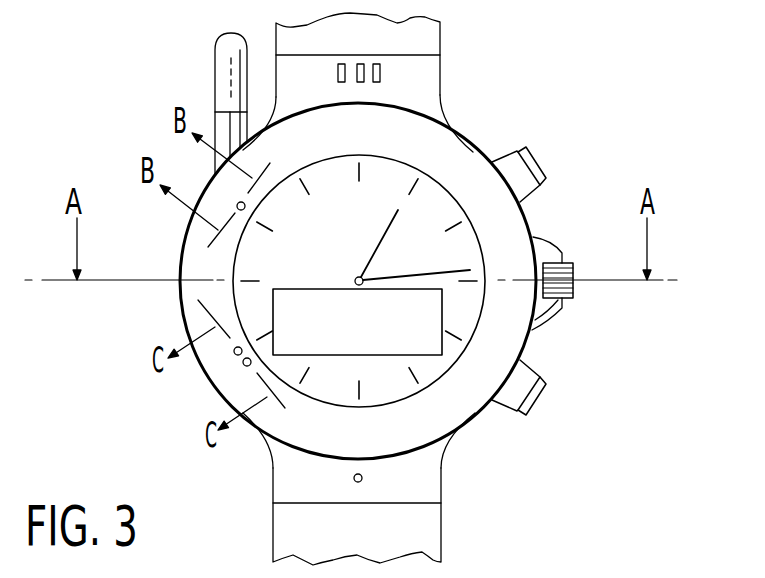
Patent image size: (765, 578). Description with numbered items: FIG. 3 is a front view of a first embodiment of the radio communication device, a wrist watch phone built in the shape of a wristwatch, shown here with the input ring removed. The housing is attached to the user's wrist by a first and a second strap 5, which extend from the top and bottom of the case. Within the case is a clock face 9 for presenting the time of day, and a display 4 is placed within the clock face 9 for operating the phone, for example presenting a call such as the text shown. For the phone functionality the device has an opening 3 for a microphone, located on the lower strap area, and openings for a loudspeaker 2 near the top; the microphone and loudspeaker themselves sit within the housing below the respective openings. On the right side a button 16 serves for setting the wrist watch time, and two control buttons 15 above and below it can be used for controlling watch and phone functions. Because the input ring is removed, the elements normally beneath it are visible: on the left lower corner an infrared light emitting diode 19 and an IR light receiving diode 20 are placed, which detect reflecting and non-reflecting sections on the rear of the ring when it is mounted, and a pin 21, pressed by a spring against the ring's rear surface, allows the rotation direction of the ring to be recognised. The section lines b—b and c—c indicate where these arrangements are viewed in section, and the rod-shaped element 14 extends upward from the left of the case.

The openings for a loudspeaker 2 is at (381, 70).
The opening for a microphone 3 is at (362, 476).
The display 4 is at (442, 356).
The strap 5 is at (440, 43).
The clock face 9 is at (443, 200).
The antenna 14 is at (215, 48).
The control button 15 is at (546, 181).
The button 16 is at (574, 297).
The infrared light emitting diode 19 is at (234, 351).
The IR light receiving diode 20 is at (245, 366).
The pin 21 is at (237, 204).